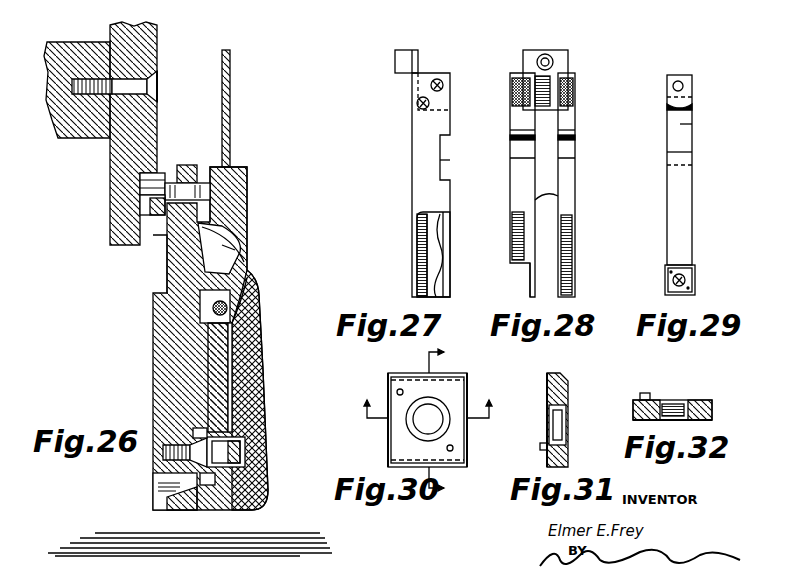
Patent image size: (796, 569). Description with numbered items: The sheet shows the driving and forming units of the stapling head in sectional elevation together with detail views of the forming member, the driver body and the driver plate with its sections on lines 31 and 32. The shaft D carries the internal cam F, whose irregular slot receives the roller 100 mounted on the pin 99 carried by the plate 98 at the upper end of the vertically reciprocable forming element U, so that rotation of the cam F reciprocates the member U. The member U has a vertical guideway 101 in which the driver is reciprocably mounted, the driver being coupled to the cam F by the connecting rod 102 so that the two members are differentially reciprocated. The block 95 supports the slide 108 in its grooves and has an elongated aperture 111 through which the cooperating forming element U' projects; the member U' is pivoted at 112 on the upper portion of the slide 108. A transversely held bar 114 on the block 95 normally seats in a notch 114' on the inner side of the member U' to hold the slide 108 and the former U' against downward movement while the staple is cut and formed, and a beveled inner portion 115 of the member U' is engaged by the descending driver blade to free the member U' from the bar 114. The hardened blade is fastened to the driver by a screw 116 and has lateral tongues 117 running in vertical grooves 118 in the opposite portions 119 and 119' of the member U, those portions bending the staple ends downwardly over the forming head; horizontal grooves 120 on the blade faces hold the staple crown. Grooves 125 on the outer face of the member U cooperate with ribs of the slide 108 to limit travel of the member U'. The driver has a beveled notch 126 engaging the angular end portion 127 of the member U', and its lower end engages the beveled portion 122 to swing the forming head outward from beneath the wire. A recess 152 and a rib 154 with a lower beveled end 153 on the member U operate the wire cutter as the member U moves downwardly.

In FIG. 26, the shaft D is at (84, 44).
In FIG. 26, the internal cam F is at (142, 54).
In FIG. 26, the forming element U is at (191, 338).
In FIG. 27, the forming element U is at (413, 185).
In FIG. 28, the forming element U is at (555, 185).
In FIG. 29, the forming element U is at (695, 170).
In FIG. 26, the cooperating forming element U' is at (205, 390).
In FIG. 29, the cooperating forming element U' is at (693, 274).
In FIG. 30, the cooperating forming element U' is at (427, 420).
In FIG. 31, the cooperating forming element U' is at (567, 418).
In FIG. 32, the cooperating forming element U' is at (679, 403).
In FIG. 26, the block 95 is at (238, 200).
In FIG. 26, the plate 98 is at (150, 208).
In FIG. 27, the plate 98 is at (412, 75).
In FIG. 28, the plate 98 is at (570, 58).
In FIG. 26, the pin 99 is at (165, 192).
In FIG. 28, the pin 99 is at (556, 53).
In FIG. 26, the roller 100 is at (140, 180).
In FIG. 27, the roller 100 is at (395, 62).
In FIG. 28, the vertical guideway 101 is at (558, 196).
In FIG. 26, the connecting rod 102 is at (188, 168).
In FIG. 26, the slide 108 is at (258, 322).
In FIG. 26, the elongated aperture 111 is at (226, 240).
In FIG. 26, the pivot axis 112 is at (246, 288).
In FIG. 26, the bar 114 is at (254, 377).
In FIG. 26, the notch 114' is at (252, 429).
In FIG. 26, the beveled inner portion 115 is at (254, 443).
In FIG. 29, the screw 116 is at (686, 280).
In FIG. 30, the tongues 117 is at (388, 440).
In FIG. 32, the tongues 117 is at (712, 412).
In FIG. 27, the vertical grooves 118 is at (445, 253).
In FIG. 28, the vertical grooves 118 is at (572, 238).
In FIG. 28, the portion of member U 119 is at (503, 134).
In FIG. 28, the portion of member U 119' is at (588, 131).
In FIG. 30, the horizontal grooves 120 is at (446, 374).
In FIG. 31, the horizontal grooves 120 is at (558, 373).
In FIG. 26, the beveled portion 122 is at (160, 490).
In FIG. 27, the grooves 125 is at (441, 160).
In FIG. 26, the beveled notch 126 is at (240, 230).
In FIG. 29, the beveled notch 126 is at (692, 127).
In FIG. 26, the angular end portion 127 is at (236, 258).
In FIG. 27, the recess 152 is at (427, 252).
In FIG. 27, the beveled end 153 is at (420, 268).
In FIG. 28, the beveled end 153 is at (522, 268).
In FIG. 27, the rib 154 is at (417, 237).
In FIG. 28, the rib 154 is at (512, 223).
In FIG. 30, the section line 31— 31 is at (444, 421).
In FIG. 30, the section line 32— 32 is at (426, 409).